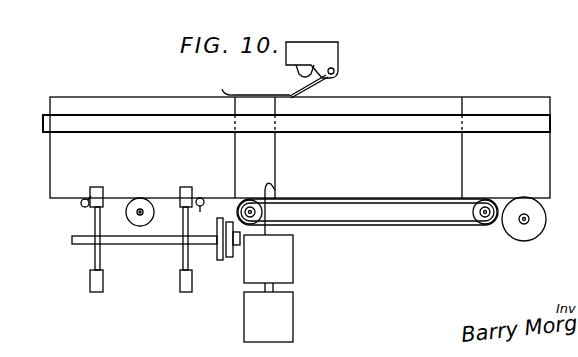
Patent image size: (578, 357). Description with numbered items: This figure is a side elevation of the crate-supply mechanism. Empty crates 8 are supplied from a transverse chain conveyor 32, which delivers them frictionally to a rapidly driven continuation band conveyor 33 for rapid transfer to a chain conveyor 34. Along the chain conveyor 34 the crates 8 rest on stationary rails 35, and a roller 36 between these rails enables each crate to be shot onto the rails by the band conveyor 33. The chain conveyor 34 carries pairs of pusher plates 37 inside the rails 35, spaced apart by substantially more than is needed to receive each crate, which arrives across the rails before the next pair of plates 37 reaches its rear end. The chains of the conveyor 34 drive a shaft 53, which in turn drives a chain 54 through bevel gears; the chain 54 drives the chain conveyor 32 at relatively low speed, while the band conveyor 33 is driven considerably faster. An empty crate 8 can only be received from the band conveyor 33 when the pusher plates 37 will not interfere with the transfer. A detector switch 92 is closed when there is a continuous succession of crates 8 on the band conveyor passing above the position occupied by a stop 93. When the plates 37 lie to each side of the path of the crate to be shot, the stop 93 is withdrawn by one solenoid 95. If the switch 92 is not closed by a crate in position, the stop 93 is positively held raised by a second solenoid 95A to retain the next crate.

The crate 8 is at (120, 113).
The detector switch 92 is at (318, 53).
The stop 93 is at (268, 186).
The continuation band conveyor 33 is at (453, 202).
The chain 54 is at (258, 212).
The second solenoid 95A is at (266, 261).
The solenoid 95 is at (276, 313).
The transverse chain conveyor 32 is at (552, 240).
The shaft 53 is at (124, 239).
The pusher plates 37 is at (182, 190).
The chain conveyor 34 is at (94, 219).
The stationary rails 35 is at (80, 205).
The roller 36 is at (131, 222).